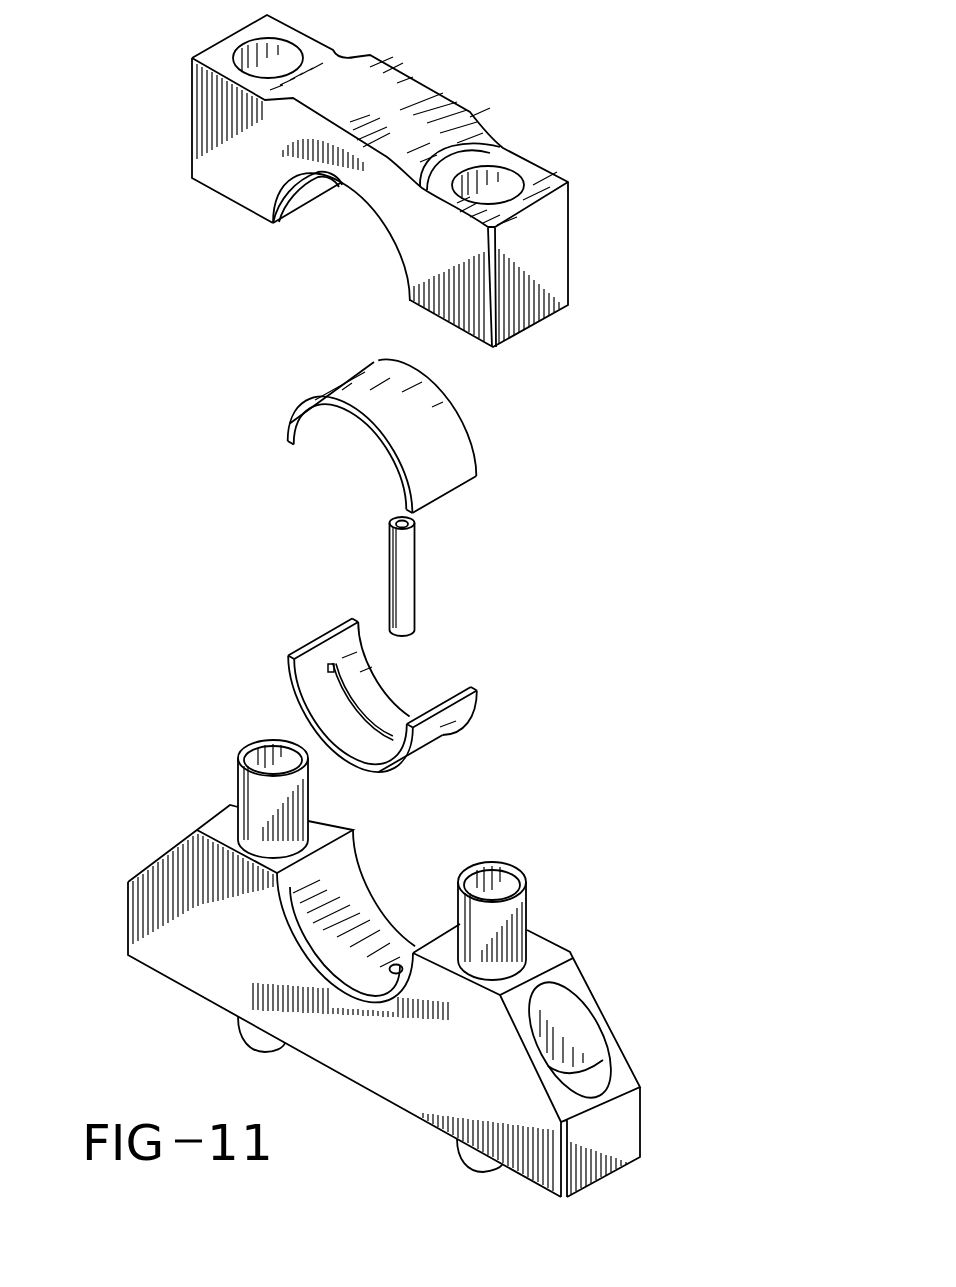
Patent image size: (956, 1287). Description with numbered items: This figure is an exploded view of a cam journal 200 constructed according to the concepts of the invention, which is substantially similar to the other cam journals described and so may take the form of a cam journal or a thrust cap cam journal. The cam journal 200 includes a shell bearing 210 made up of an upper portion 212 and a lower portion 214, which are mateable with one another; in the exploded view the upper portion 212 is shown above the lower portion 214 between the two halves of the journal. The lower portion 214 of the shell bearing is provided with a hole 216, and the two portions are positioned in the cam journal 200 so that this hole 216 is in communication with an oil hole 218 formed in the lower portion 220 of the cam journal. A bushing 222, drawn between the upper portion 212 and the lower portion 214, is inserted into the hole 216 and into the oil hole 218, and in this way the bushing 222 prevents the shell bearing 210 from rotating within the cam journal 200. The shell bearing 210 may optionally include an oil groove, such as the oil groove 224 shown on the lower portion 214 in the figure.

The cam journal 200 is at (655, 113).
The shell bearing 210 is at (520, 598).
The upper portion 212 is at (452, 457).
The lower portion 214 is at (383, 702).
The hole 216 is at (395, 740).
The oil hole 218 is at (400, 964).
The lower portion of the cam journal 220 is at (357, 968).
The bushing 222 is at (403, 567).
The oil groove 224 is at (330, 668).